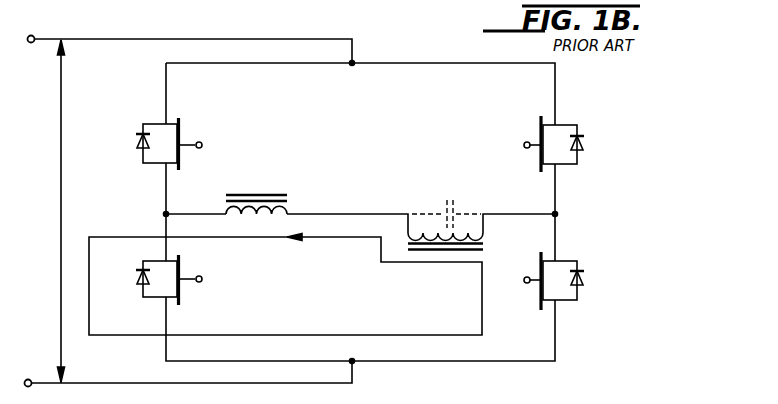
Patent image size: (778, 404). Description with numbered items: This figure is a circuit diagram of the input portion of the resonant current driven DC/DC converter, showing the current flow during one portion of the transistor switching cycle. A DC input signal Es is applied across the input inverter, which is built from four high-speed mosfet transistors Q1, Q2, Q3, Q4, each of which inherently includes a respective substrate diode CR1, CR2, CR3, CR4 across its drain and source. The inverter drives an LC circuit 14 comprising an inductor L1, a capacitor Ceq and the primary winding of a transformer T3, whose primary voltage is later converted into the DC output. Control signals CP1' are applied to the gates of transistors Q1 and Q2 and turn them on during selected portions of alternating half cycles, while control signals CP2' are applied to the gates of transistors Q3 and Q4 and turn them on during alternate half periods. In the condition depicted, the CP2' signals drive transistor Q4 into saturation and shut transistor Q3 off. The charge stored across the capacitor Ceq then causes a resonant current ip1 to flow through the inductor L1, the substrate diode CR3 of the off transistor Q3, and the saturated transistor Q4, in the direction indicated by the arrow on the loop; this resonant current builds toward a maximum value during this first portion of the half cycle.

The LC circuit 14 is at (366, 186).
The mosfet transistor Q1 is at (181, 133).
The mosfet transistor Q2 is at (542, 137).
The mosfet transistor Q3 is at (180, 287).
The mosfet transistor Q4 is at (542, 284).
The substrate diode CR1 is at (123, 145).
The substrate diode CR2 is at (582, 149).
The substrate diode CR3 is at (123, 288).
The substrate diode CR4 is at (583, 280).
The inductor L1 is at (256, 194).
The transformer T3 is at (458, 247).
The capacitor Ceq is at (461, 197).
The DC input signal Es is at (63, 211).
The resonant current ip1 is at (291, 240).
The control signal CP1' is at (364, 148).
The control signal CP2' is at (367, 287).